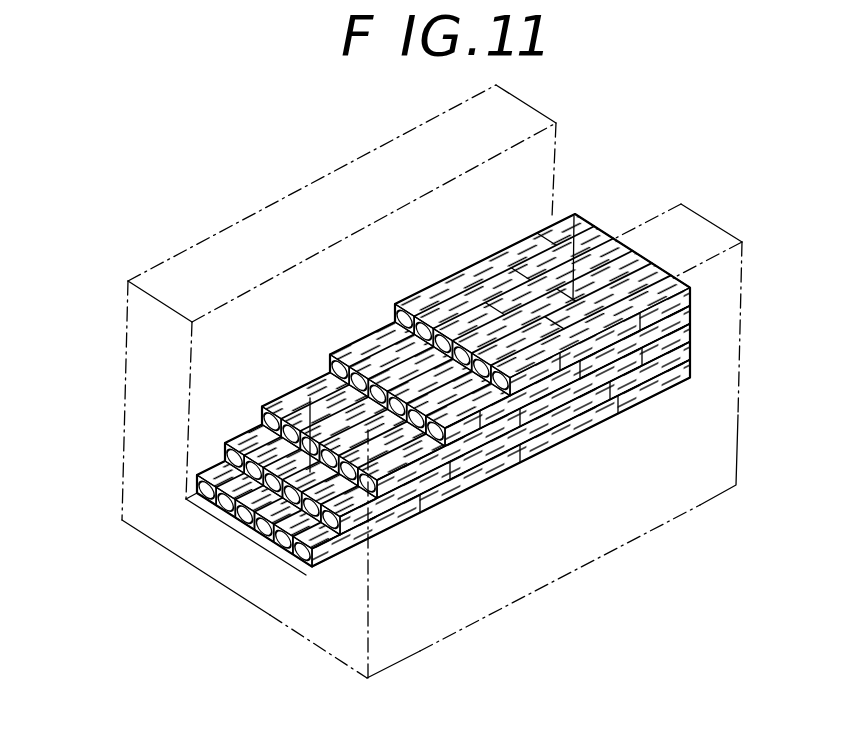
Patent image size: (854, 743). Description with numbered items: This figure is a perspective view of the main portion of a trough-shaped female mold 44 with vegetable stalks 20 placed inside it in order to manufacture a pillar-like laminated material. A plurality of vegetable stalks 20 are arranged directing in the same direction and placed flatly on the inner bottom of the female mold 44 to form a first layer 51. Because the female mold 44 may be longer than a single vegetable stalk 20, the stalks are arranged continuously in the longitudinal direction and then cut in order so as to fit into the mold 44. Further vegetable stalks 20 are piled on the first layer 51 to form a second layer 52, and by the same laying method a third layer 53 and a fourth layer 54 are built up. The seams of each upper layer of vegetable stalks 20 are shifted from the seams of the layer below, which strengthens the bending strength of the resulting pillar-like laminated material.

The vegetable stalk 20 is at (396, 309).
The female mold 44 is at (237, 578).
The first layer 51 is at (213, 514).
The second layer 52 is at (224, 448).
The third layer 53 is at (261, 407).
The fourth layer 54 is at (328, 364).